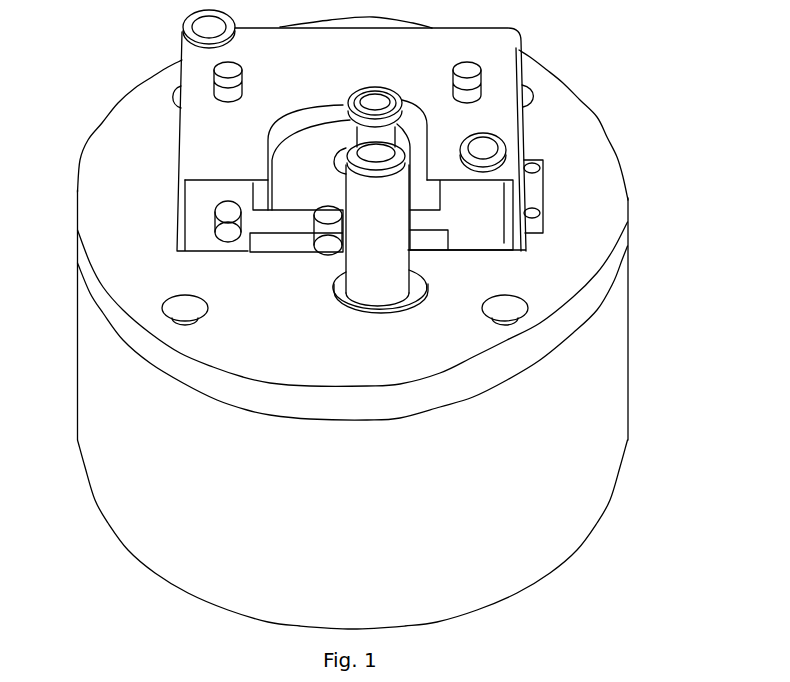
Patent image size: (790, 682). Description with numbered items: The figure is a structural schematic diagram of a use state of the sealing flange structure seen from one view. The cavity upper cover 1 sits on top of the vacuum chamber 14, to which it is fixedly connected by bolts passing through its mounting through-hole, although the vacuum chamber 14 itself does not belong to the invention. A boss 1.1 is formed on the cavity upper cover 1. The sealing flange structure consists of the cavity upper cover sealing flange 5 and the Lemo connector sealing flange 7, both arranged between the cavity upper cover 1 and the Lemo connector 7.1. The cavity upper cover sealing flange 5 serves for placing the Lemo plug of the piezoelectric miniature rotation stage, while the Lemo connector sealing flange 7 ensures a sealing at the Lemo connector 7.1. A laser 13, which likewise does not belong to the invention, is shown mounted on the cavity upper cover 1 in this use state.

The cavity upper cover 1 is at (574, 160).
The boss 1.1 is at (430, 242).
The cavity upper cover sealing flange 5 is at (383, 220).
The Lemo connector sealing flange 7 is at (367, 142).
The Lemo connector 7.1 is at (372, 102).
The laser 13 is at (443, 120).
The vacuum chamber 14 is at (597, 407).